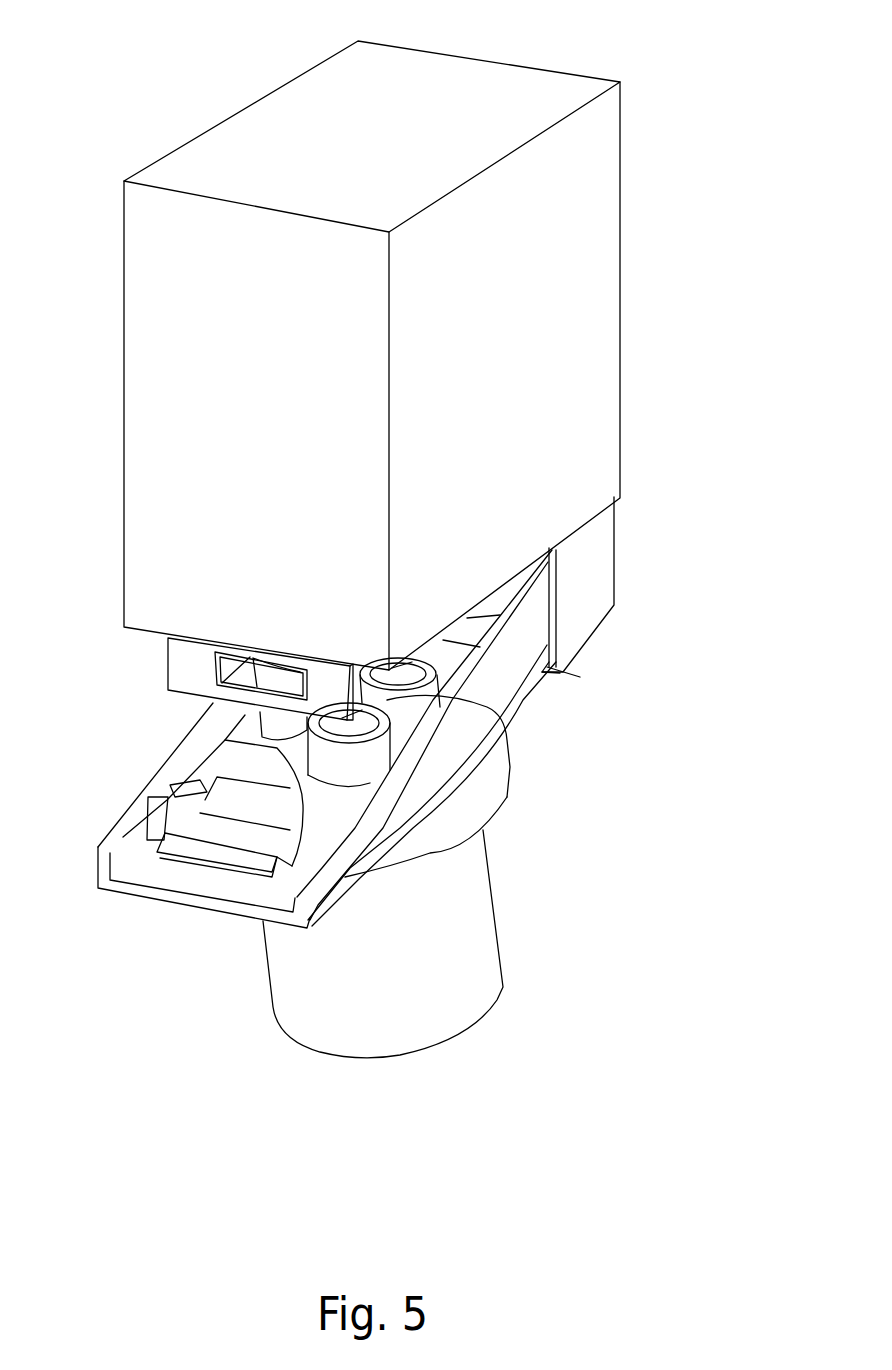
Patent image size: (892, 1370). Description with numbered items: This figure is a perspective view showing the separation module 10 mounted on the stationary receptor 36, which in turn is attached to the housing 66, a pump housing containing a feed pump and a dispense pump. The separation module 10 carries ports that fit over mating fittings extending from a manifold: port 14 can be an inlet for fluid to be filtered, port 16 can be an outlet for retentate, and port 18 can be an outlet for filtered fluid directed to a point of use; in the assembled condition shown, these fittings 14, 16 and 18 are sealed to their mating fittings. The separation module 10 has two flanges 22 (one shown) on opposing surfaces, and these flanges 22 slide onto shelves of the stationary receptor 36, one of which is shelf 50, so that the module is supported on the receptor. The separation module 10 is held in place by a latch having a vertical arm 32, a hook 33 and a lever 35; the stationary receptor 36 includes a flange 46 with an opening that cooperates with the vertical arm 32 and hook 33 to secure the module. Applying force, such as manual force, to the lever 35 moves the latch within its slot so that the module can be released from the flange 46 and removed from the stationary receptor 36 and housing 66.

The separation module 10 is at (508, 903).
The port 14 is at (418, 653).
The port 16 is at (512, 712).
The port 18 is at (285, 682).
The flange 22 is at (510, 693).
The vertical arm 32 is at (235, 763).
The hook 33 is at (307, 774).
The lever 35 is at (227, 842).
The stationary receptor 36 is at (593, 547).
The flange 46 is at (217, 705).
The shelf 50 is at (562, 675).
The housing 66 is at (568, 358).